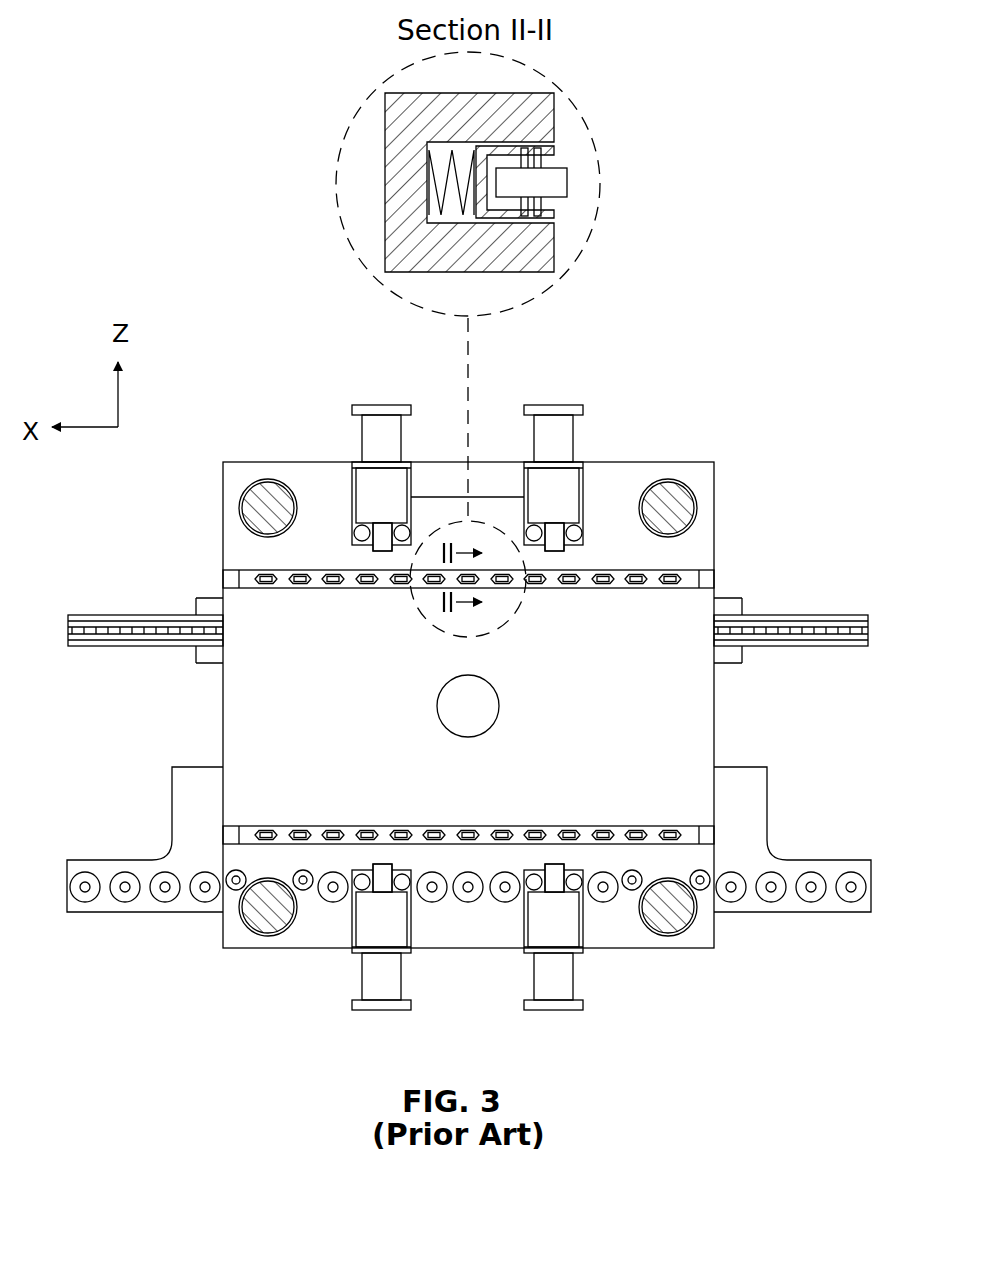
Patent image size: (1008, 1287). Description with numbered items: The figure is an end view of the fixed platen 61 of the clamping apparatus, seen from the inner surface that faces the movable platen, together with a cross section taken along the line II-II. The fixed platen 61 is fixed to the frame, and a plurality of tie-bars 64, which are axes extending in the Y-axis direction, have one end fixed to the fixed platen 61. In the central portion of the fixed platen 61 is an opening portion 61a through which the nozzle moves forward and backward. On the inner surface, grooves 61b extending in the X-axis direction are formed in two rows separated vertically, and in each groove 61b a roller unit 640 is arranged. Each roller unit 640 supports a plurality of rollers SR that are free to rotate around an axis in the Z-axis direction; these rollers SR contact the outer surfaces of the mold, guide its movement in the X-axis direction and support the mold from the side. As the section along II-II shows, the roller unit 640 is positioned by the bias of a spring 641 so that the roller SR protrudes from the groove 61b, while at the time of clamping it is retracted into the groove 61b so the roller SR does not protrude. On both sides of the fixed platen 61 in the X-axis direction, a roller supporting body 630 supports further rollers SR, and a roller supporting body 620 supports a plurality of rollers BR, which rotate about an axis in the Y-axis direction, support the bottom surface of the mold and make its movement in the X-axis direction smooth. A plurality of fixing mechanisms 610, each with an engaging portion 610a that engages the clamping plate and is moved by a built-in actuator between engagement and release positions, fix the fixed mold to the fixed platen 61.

The fixed platen 61 is at (548, 103).
The opening portion 61a is at (499, 708).
The grooves 61b is at (553, 223).
The tie-bars 64 is at (268, 490).
The fixing mechanisms 610 is at (383, 405).
The engaging portion 610a is at (383, 551).
The roller supporting body 620 is at (108, 860).
The roller supporting body 630 is at (108, 615).
The roller unit 640 is at (552, 147).
The spring 641 is at (427, 193).
The rollers SR is at (567, 182).
The rollers BR is at (165, 903).